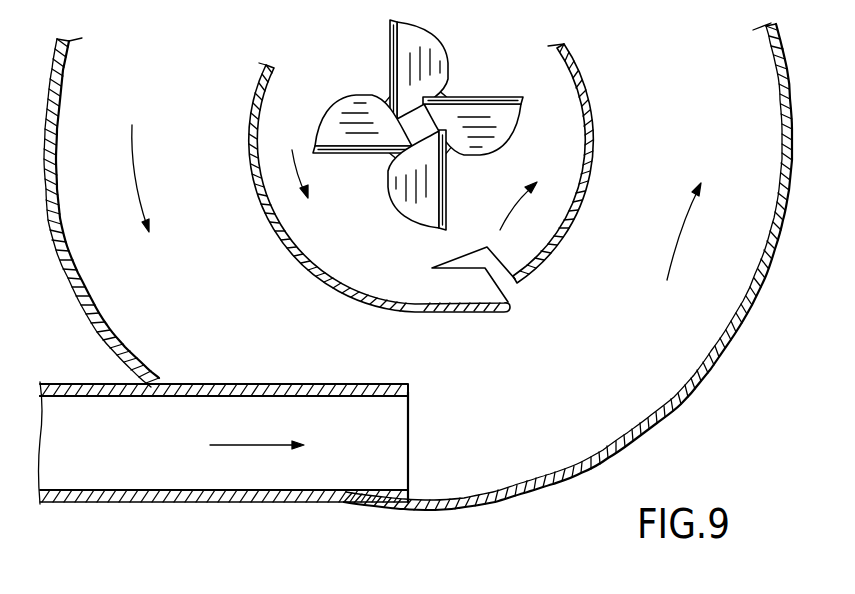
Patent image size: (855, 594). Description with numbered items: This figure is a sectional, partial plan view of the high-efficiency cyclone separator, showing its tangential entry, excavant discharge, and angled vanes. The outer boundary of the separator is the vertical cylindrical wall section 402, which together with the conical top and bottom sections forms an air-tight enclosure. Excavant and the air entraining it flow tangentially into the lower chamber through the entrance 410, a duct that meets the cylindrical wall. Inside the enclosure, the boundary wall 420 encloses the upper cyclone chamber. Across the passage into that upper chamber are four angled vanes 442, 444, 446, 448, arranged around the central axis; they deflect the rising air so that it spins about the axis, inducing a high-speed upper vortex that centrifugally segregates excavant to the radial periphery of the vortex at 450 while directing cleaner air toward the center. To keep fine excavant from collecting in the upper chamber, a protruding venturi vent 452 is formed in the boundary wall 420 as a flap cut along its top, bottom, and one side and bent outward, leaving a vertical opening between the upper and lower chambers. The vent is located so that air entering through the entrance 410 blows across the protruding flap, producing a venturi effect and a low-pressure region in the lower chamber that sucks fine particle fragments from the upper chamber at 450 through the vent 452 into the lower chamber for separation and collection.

The vertical cylindrical wall section 402 is at (687, 390).
The entrance 410 is at (255, 387).
The boundary wall 420 is at (421, 201).
The angled vane 442 is at (338, 123).
The angled vane 444 is at (413, 48).
The angled vane 446 is at (490, 117).
The angled vane 448 is at (415, 200).
The radial periphery of the vortex 450 is at (342, 272).
The protruding venturi vent 452 is at (525, 300).